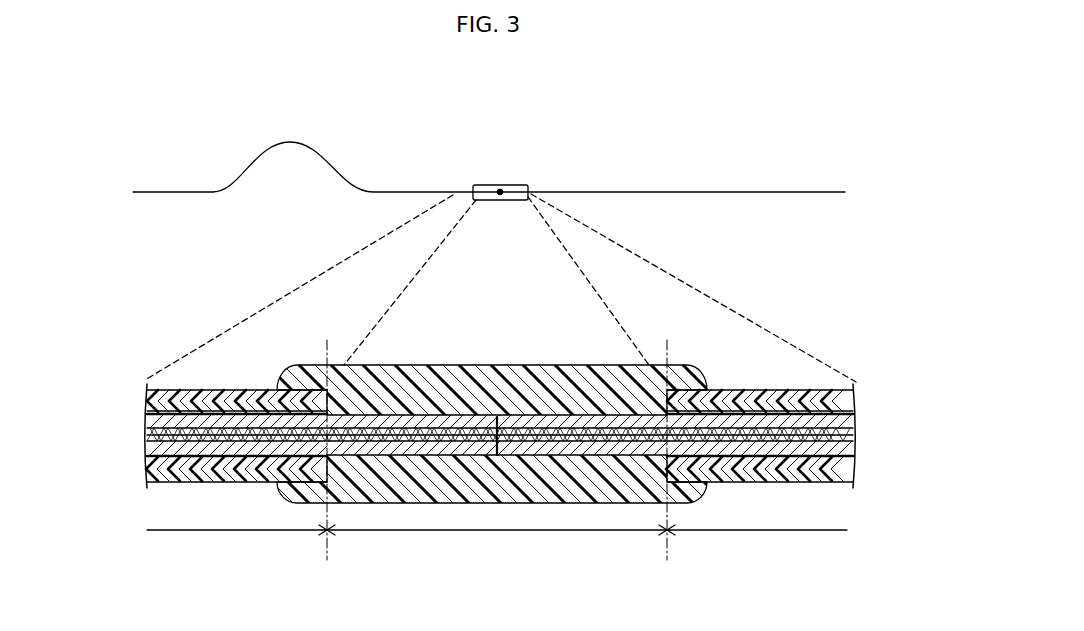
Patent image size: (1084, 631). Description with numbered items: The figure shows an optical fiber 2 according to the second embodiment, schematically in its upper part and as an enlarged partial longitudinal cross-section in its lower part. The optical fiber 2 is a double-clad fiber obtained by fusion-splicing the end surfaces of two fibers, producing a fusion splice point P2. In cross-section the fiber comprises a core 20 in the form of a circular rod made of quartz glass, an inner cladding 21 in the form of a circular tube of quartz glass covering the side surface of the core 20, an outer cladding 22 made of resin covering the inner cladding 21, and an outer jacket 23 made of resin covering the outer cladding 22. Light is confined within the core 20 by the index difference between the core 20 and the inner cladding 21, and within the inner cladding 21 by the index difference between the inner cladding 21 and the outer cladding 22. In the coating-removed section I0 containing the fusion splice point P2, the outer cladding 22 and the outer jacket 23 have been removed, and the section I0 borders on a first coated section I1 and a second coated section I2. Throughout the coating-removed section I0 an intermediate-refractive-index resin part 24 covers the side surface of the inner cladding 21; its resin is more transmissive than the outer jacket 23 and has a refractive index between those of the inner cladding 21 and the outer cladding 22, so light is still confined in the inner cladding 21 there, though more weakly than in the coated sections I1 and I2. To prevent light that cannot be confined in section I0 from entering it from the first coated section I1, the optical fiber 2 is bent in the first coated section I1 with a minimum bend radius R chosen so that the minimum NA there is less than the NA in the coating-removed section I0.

The optical fiber 2 is at (815, 120).
The minimum bend radius R is at (295, 154).
The coating-removed section I0 is at (487, 163).
The first coated section I1 is at (403, 163).
The second coated section I2 is at (590, 163).
The fusion splice point P2 is at (503, 202).
The core 20 is at (582, 433).
The inner cladding 21 is at (540, 417).
The outer cladding 22 is at (160, 415).
The outer jacket 23 is at (160, 401).
The intermediate-refractive-index resin part 24 is at (411, 365).